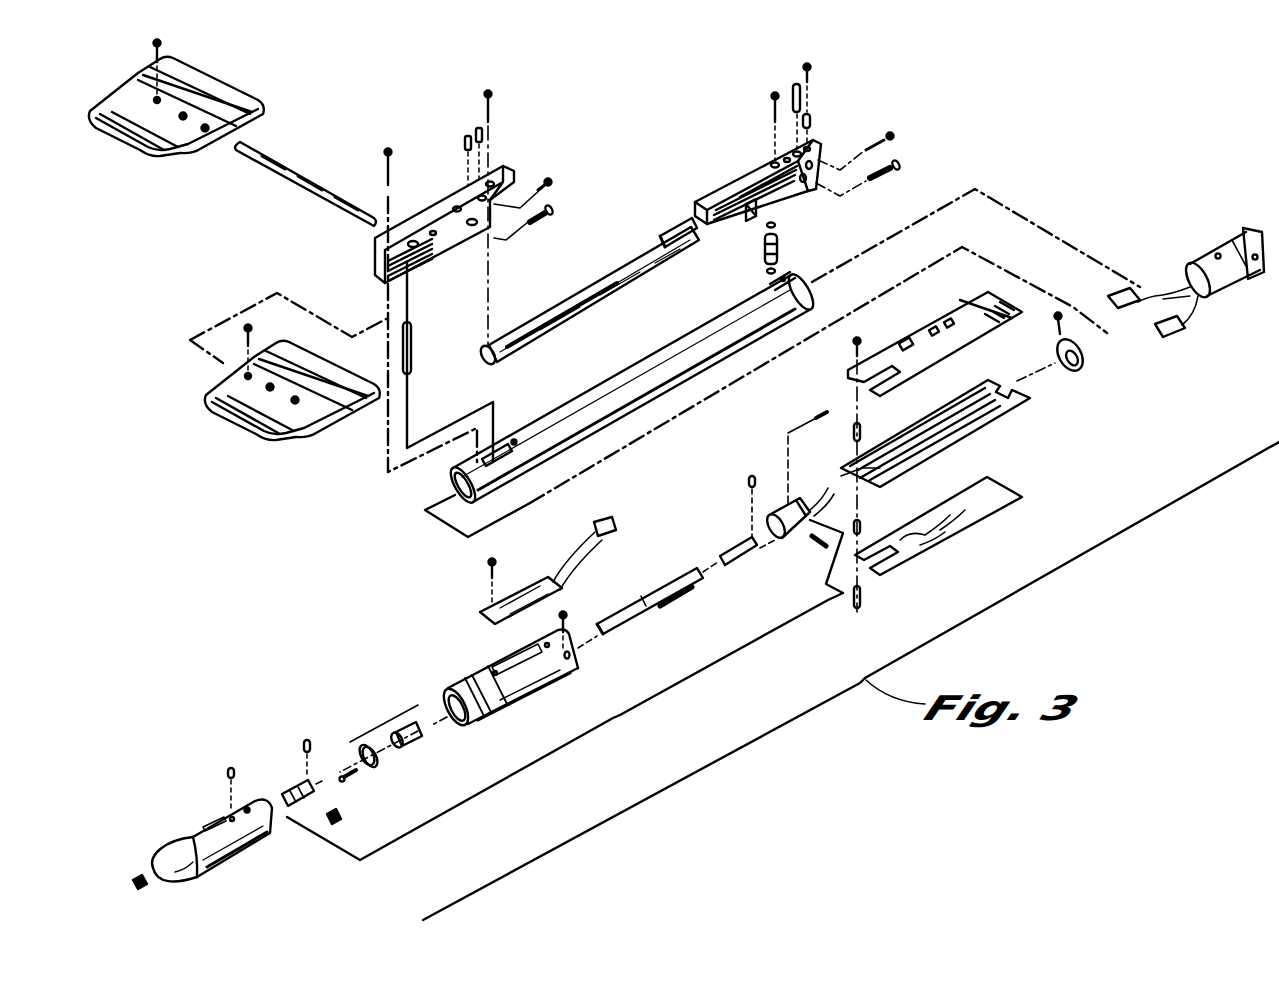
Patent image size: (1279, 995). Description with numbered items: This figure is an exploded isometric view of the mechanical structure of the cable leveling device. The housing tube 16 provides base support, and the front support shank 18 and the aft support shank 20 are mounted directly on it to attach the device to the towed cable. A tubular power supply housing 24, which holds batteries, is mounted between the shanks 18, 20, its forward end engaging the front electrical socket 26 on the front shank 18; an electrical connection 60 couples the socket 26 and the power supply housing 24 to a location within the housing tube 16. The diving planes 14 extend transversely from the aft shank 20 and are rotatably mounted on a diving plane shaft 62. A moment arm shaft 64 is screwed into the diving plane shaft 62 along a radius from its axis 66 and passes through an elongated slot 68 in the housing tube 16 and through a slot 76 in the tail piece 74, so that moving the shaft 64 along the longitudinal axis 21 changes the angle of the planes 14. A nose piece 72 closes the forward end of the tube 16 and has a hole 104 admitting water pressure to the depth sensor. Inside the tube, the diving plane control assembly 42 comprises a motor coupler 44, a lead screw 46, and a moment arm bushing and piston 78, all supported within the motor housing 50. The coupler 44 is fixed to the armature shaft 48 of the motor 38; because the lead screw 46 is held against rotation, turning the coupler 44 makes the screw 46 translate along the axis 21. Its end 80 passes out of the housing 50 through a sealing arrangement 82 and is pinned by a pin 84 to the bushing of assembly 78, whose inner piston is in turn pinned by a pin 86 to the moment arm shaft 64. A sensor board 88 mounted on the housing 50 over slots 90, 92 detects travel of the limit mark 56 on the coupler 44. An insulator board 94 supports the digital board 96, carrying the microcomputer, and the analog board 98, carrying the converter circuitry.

The diving planes 14 is at (253, 100).
The housing tube 16 is at (595, 388).
The front support shank 18 is at (730, 168).
The aft support shank 20 is at (378, 258).
The longitudinal axis 21 is at (413, 523).
The power supply housing 24 is at (585, 287).
The front electrical socket 26 is at (741, 226).
The motor 38 is at (800, 503).
The diving plane control assembly 42 is at (615, 718).
The motor coupler 44 is at (727, 544).
The lead screw 46 is at (625, 623).
The armature shaft 48 is at (762, 545).
The motor housing 50 is at (533, 687).
The limit mark 56 is at (664, 613).
The electrical connection 60 is at (781, 249).
The diving plane shaft 62 is at (293, 175).
The moment arm shaft 64 is at (412, 350).
The axis of the diving plane shaft 66 is at (470, 278).
The slot 68 is at (502, 443).
The nose piece 72 is at (1220, 252).
The tail piece 74 is at (179, 824).
The slot 76 is at (220, 820).
The moment arm bushing and piston 78 is at (290, 778).
The end of the lead screw 80 is at (598, 633).
The sealing arrangement 82 is at (362, 735).
The pin 84 is at (308, 738).
The pin 86 is at (342, 814).
The sensor board 88 is at (483, 608).
The slot 90 is at (497, 672).
The slot 92 is at (547, 640).
The insulator board 94 is at (923, 428).
The digital board 96 is at (910, 337).
The analog board 98 is at (930, 553).
The hole 104 is at (1243, 231).